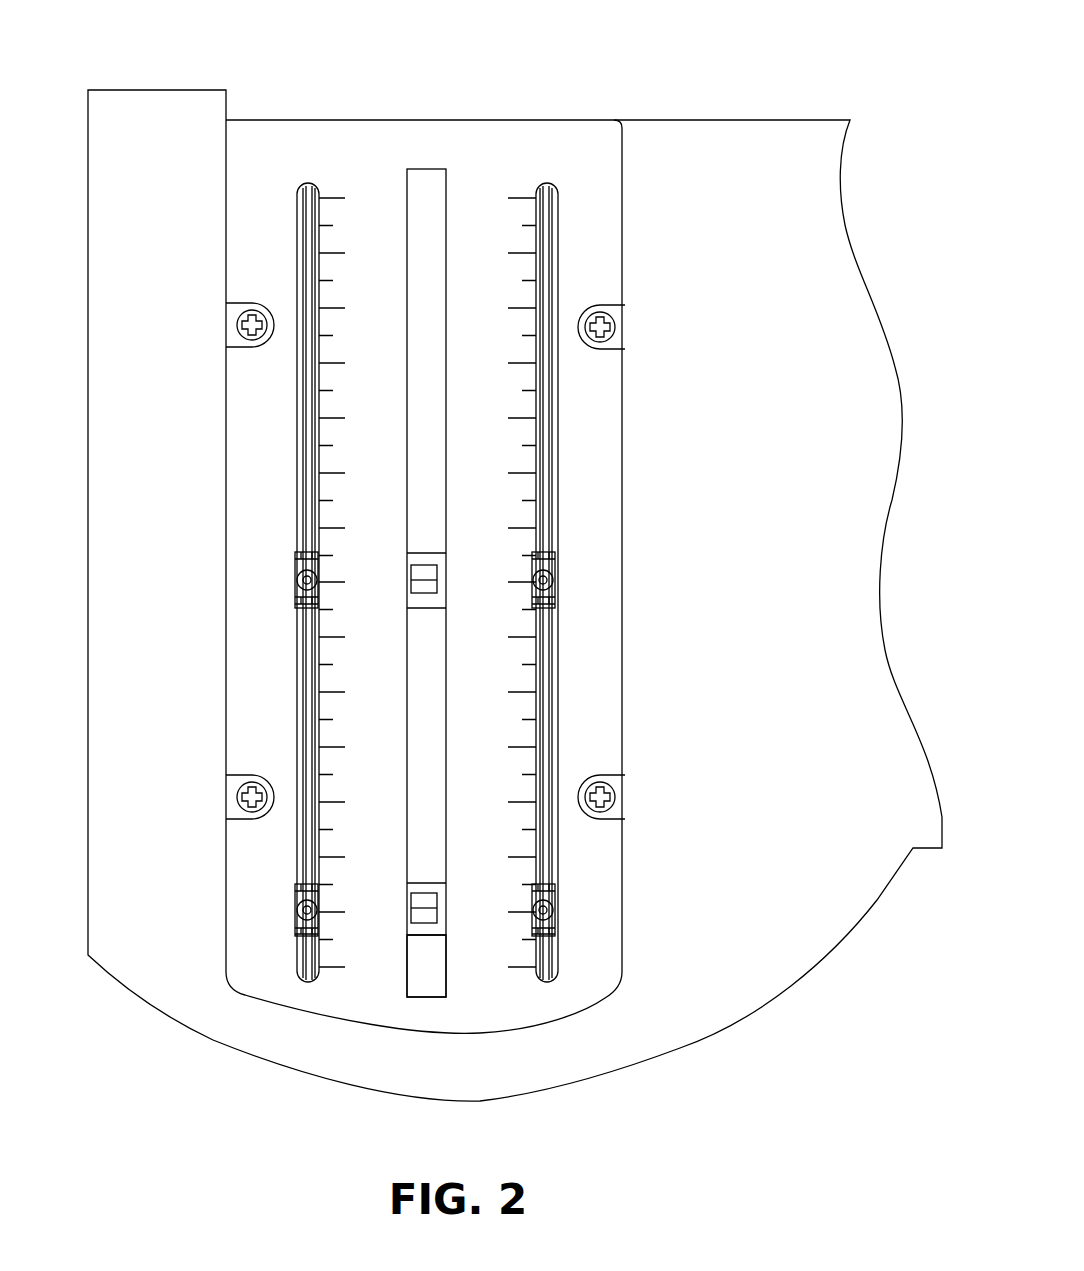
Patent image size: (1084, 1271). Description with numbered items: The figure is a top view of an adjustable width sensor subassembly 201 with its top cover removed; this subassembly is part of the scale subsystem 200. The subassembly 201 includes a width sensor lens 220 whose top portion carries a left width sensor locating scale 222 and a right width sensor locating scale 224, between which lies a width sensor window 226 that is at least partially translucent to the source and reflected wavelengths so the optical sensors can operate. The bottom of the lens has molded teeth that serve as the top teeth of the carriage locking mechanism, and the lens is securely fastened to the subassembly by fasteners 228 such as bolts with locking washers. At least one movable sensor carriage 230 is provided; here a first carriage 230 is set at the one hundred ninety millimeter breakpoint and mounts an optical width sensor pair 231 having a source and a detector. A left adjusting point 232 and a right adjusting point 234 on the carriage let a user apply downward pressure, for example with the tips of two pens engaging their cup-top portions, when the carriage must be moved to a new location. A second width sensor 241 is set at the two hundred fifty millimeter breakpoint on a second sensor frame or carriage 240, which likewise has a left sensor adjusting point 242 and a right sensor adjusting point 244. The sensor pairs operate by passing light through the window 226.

The scale subsystem 200 is at (802, 925).
The adjustable width sensor subassembly 201 is at (575, 1010).
The width sensor lens 220 is at (265, 142).
The left width sensor locating scale 222 is at (340, 178).
The right width sensor locating scale 224 is at (512, 165).
The width sensor window 226 is at (430, 169).
The fastener 228 is at (250, 318).
The sensor carriage 230 is at (304, 552).
The optical width sensor pair 231 is at (436, 552).
The left adjusting point 232 is at (297, 579).
The right adjusting point 234 is at (553, 578).
The sensor carriage 240 is at (423, 936).
The second width sensor 241 is at (432, 892).
The left sensor adjusting point 242 is at (298, 908).
The right sensor adjusting point 244 is at (553, 906).